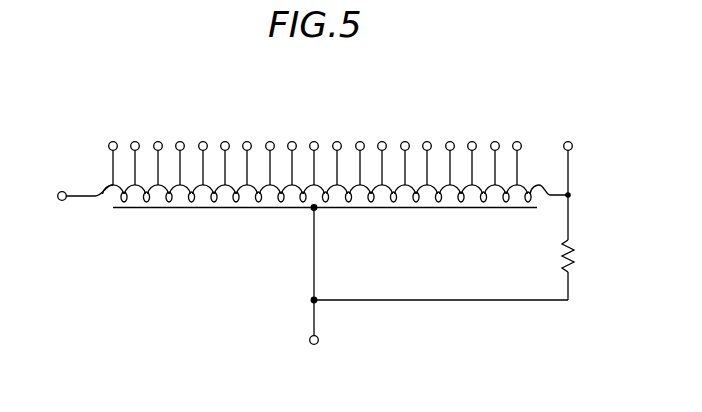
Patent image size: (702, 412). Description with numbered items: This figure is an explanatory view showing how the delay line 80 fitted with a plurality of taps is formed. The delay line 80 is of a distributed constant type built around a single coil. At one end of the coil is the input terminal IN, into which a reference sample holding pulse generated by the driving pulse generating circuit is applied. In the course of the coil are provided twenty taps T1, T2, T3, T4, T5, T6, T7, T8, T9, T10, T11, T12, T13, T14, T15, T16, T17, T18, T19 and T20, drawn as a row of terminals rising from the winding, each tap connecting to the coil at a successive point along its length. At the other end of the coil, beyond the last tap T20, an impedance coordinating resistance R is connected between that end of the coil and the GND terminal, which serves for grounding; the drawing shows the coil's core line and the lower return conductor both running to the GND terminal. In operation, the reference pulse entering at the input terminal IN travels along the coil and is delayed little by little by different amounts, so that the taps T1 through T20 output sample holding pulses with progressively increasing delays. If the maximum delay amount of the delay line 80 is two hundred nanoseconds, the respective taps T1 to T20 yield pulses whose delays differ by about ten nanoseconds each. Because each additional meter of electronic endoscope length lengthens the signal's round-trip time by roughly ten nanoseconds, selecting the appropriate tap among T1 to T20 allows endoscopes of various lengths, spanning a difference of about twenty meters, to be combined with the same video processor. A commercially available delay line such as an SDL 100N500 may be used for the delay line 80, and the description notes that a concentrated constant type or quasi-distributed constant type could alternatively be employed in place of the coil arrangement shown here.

The delay line 80 is at (422, 108).
The tap T1 is at (111, 155).
The tap T2 is at (133, 155).
The tap T3 is at (156, 155).
The tap T4 is at (178, 155).
The tap T5 is at (201, 155).
The tap T6 is at (223, 155).
The tap T7 is at (245, 155).
The tap T8 is at (268, 155).
The tap T9 is at (290, 155).
The tap T10 is at (313, 155).
The tap T11 is at (336, 155).
The tap T12 is at (359, 155).
The tap T13 is at (381, 155).
The tap T14 is at (404, 155).
The tap T15 is at (426, 155).
The tap T16 is at (449, 155).
The tap T17 is at (471, 155).
The tap T18 is at (494, 155).
The tap T19 is at (516, 155).
The tap T20 is at (567, 183).
The input terminal IN is at (50, 197).
The impedance coordinating resistance R is at (576, 269).
The GND terminal GND is at (432, 285).